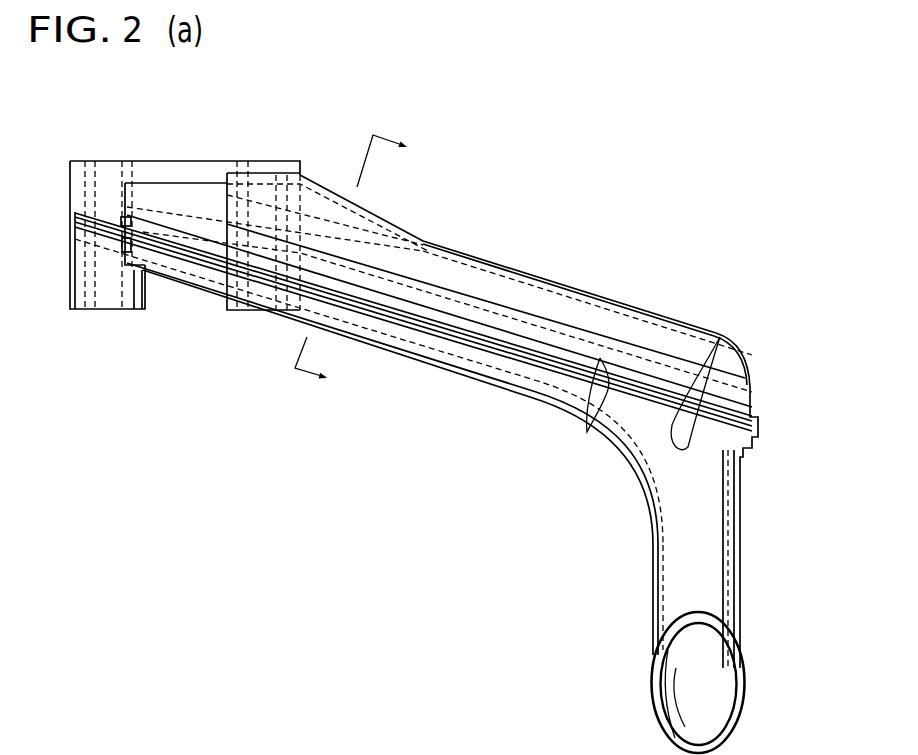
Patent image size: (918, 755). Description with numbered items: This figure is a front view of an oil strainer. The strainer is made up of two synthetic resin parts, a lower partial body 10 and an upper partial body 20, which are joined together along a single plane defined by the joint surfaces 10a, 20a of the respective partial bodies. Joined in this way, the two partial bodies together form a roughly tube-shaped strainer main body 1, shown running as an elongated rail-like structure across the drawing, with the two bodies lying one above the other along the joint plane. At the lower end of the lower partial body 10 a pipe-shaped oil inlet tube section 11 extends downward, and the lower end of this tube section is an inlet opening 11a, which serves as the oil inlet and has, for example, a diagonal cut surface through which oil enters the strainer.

The strainer main body 1 is at (520, 188).
The lower partial body 10 is at (503, 389).
The joint surface 10a is at (600, 358).
The oil inlet tube section 11 is at (652, 590).
The inlet opening 11a is at (743, 705).
The upper partial body 20 is at (578, 288).
The joint surface 20a is at (720, 337).